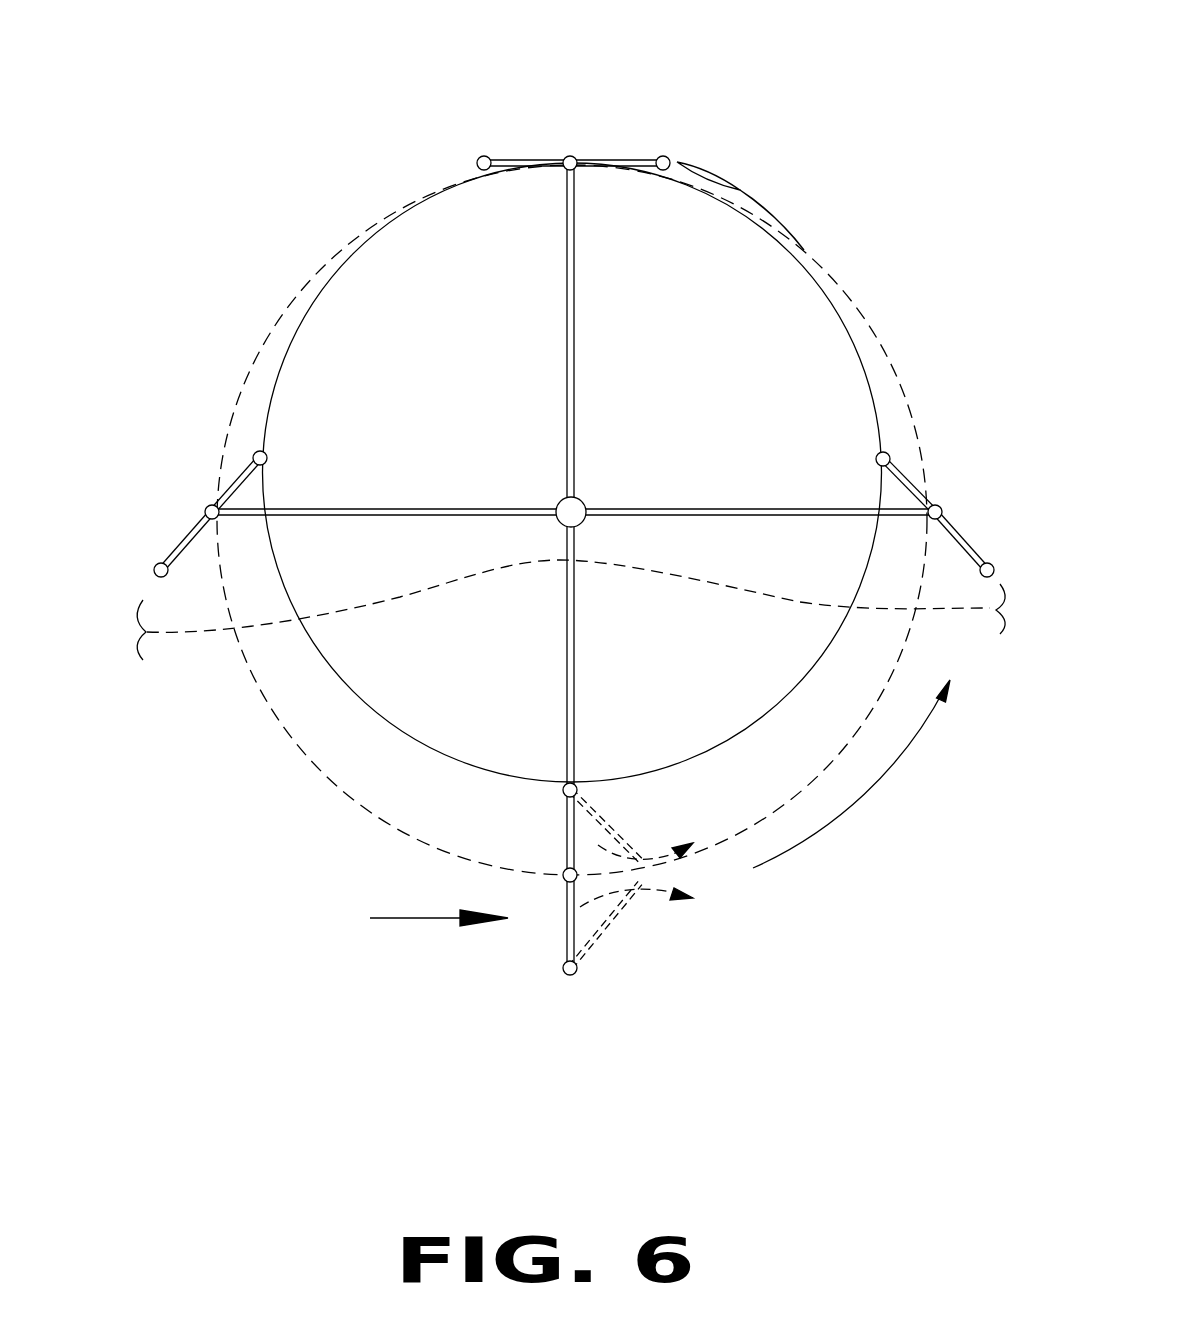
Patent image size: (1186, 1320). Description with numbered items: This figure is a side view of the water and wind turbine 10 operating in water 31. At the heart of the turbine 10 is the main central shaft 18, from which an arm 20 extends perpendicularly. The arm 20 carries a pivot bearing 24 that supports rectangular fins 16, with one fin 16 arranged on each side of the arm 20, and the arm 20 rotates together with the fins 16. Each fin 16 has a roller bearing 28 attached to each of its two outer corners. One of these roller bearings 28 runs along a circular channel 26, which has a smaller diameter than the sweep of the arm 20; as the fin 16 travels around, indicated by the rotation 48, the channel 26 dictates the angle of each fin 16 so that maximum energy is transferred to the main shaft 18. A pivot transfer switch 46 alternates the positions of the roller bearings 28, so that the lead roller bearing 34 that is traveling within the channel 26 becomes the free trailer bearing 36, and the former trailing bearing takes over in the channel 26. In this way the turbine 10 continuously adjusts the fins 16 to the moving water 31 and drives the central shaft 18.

The water and wind turbine 10 is at (912, 96).
The fin 16 is at (518, 160).
The main central shaft 18 is at (565, 511).
The arm 20 is at (567, 335).
The pivot bearing 24 is at (239, 459).
The channel 26 is at (372, 232).
The roller bearing 28 is at (239, 461).
The lead roller bearing 34 is at (260, 455).
The free trailer bearing 36 is at (172, 548).
The water 31 is at (427, 920).
The pivot transfer switch 46 is at (748, 193).
The rotation of fin 48 is at (847, 800).